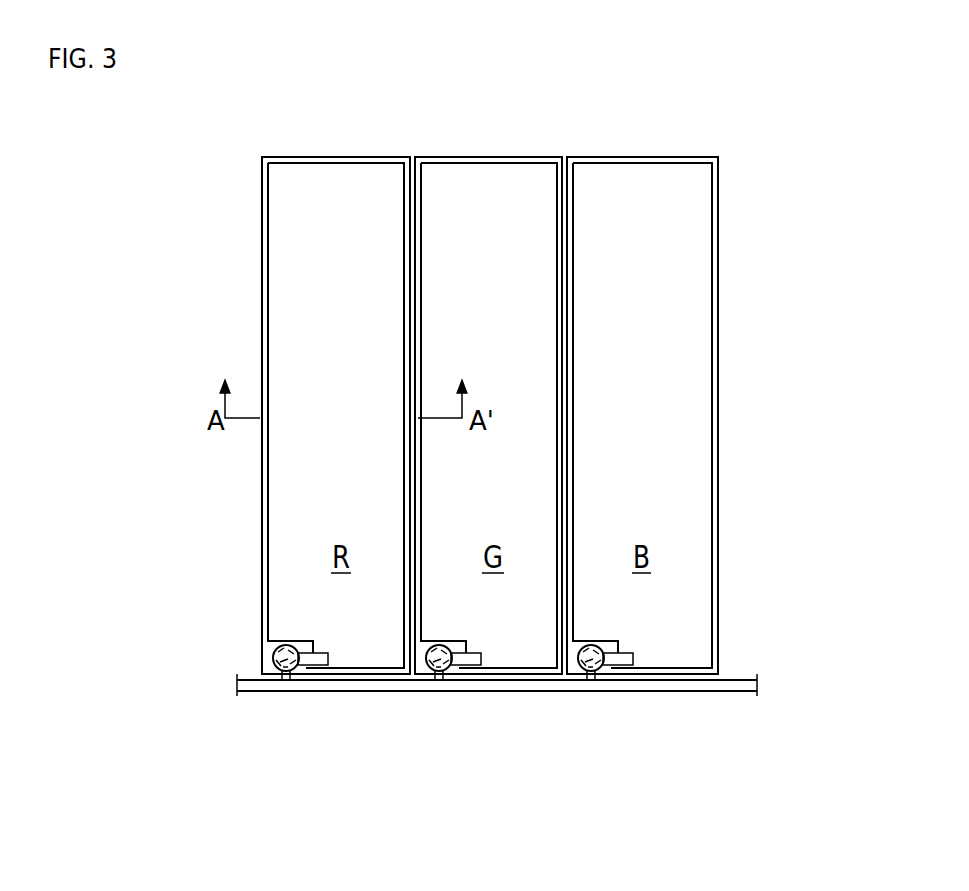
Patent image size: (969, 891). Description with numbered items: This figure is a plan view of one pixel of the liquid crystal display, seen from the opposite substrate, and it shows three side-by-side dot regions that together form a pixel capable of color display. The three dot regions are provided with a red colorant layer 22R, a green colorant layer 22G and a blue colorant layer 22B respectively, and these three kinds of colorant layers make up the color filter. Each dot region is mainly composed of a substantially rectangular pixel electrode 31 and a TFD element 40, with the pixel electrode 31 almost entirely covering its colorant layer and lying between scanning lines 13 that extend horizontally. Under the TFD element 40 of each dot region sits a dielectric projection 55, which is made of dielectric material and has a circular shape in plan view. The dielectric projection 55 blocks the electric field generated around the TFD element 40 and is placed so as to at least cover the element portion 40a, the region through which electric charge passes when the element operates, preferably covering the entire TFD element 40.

The red colorant layer 22R is at (335, 157).
The green colorant layer 22G is at (519, 157).
The blue colorant layer 22B is at (699, 157).
The pixel electrode 31 is at (276, 580).
The dielectric projection 55 is at (273, 653).
The TFD element 40 is at (303, 682).
The element portion 40a is at (285, 688).
The scanning line 13 is at (732, 688).